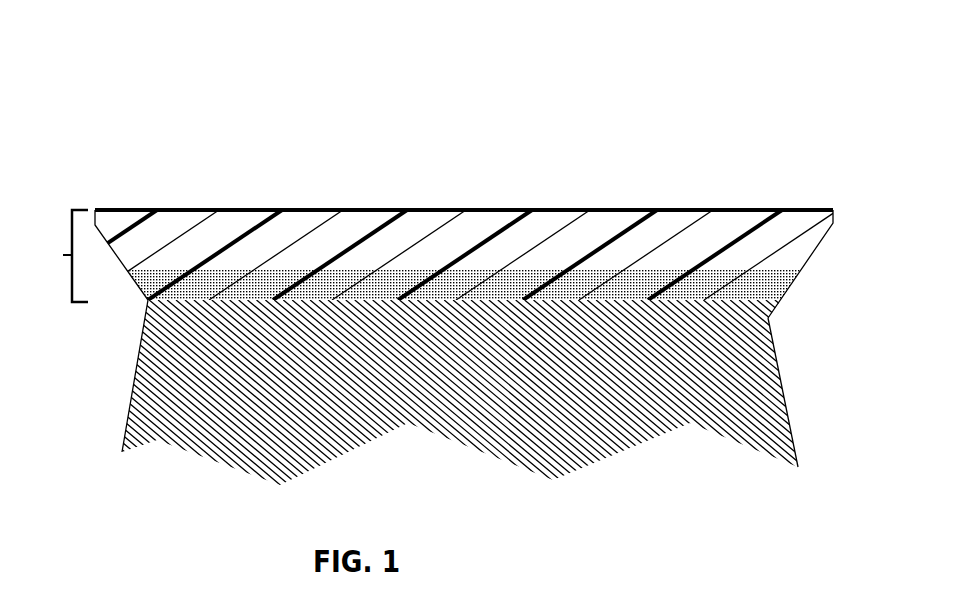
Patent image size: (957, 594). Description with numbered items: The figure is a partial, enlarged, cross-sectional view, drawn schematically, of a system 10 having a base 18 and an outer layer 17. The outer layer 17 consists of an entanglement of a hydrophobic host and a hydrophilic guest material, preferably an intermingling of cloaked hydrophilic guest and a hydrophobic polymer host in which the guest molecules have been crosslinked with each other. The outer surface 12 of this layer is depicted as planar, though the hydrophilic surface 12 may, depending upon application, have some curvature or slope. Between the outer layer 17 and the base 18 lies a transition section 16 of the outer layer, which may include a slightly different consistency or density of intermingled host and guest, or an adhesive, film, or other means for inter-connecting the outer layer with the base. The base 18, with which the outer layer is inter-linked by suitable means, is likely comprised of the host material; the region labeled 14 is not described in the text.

The system 10 is at (217, 78).
The outer surface 12 is at (563, 205).
The intermediate layer 14 is at (812, 255).
The transition section 16 is at (792, 291).
The outer layer 17 is at (63, 255).
The base 18 is at (780, 373).